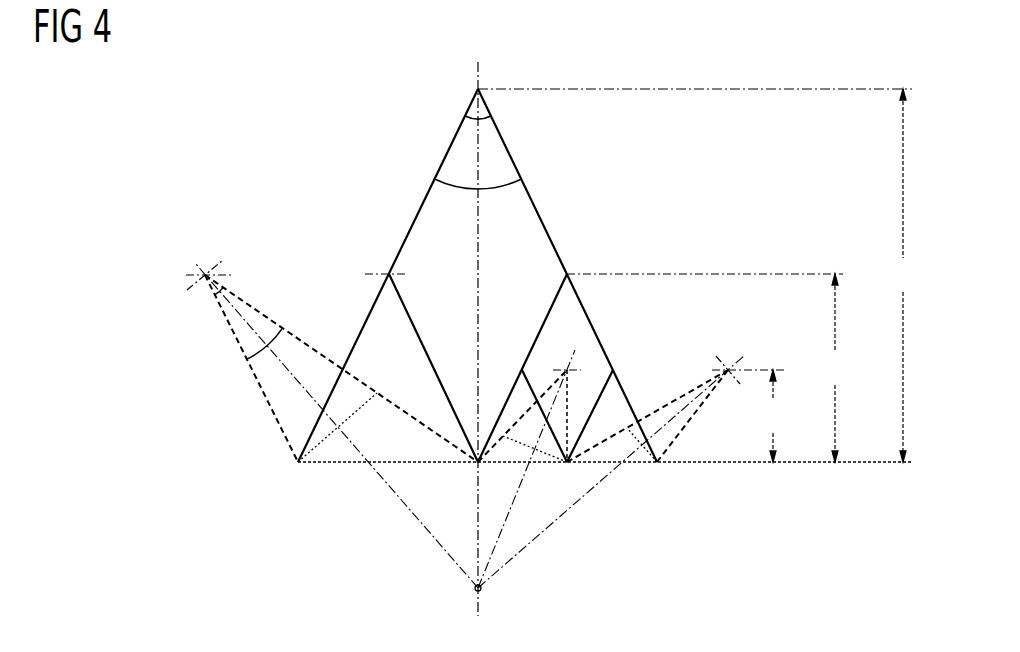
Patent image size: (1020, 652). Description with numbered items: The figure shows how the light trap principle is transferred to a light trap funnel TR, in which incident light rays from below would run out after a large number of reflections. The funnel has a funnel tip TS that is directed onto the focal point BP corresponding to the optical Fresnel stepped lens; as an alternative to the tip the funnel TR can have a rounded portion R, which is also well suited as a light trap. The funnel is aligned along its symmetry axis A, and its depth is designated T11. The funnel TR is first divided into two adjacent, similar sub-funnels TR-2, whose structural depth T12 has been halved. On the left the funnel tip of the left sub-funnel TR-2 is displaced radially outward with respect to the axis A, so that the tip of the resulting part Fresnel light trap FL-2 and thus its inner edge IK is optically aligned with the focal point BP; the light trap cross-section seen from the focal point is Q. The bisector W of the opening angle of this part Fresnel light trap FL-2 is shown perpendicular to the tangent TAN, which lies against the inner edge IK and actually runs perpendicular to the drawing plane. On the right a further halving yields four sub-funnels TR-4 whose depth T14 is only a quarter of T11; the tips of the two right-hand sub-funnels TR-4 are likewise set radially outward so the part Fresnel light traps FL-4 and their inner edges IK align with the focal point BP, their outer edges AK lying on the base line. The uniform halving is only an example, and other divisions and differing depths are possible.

The symmetry axis A is at (478, 324).
The funnel tip TS is at (476, 90).
The rounded portion R is at (492, 121).
The light trap funnel TR is at (526, 187).
The inner edge IK is at (389, 272).
The tangent TAN is at (187, 286).
The sub-funnel TR-2 is at (398, 292).
The part Fresnel light trap FL-2 is at (244, 353).
The bisector W is at (293, 378).
The sub-funnel TR-4 is at (521, 370).
The part Fresnel light trap FL-4 is at (507, 430).
The outer edge AK is at (298, 464).
The light trap cross-section Q is at (327, 440).
The focal point BP is at (482, 592).
The depth of the light trap funnel T11 is at (902, 275).
The structural depth of the sub-funnels T12 is at (711, 368).
The depth of the sub-funnels T14 is at (772, 416).